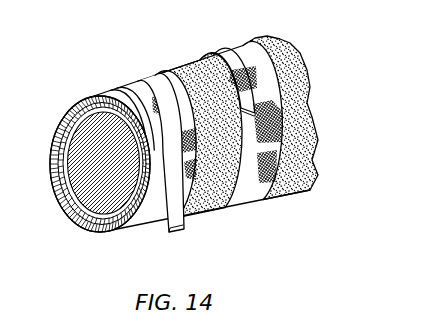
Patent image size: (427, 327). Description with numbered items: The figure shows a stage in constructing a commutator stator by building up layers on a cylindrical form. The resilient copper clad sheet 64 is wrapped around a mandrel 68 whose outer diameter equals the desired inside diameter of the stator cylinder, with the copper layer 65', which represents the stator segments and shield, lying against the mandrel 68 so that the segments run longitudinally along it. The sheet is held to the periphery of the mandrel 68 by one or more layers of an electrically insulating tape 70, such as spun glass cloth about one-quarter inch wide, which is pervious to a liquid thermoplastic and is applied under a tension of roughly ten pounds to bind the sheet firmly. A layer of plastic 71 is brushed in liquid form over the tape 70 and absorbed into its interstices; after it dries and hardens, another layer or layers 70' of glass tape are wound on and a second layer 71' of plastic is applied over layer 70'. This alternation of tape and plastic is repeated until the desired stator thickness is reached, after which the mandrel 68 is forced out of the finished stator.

The resilient copper clad sheet 64 is at (78, 105).
The copper layer 65' is at (81, 164).
The mandrel 68 is at (97, 135).
The electrically insulating tape 70 is at (132, 97).
The layer of plastic 71 is at (197, 126).
The layer of glass tape 70' is at (225, 67).
The second layer of plastic 71' is at (280, 104).